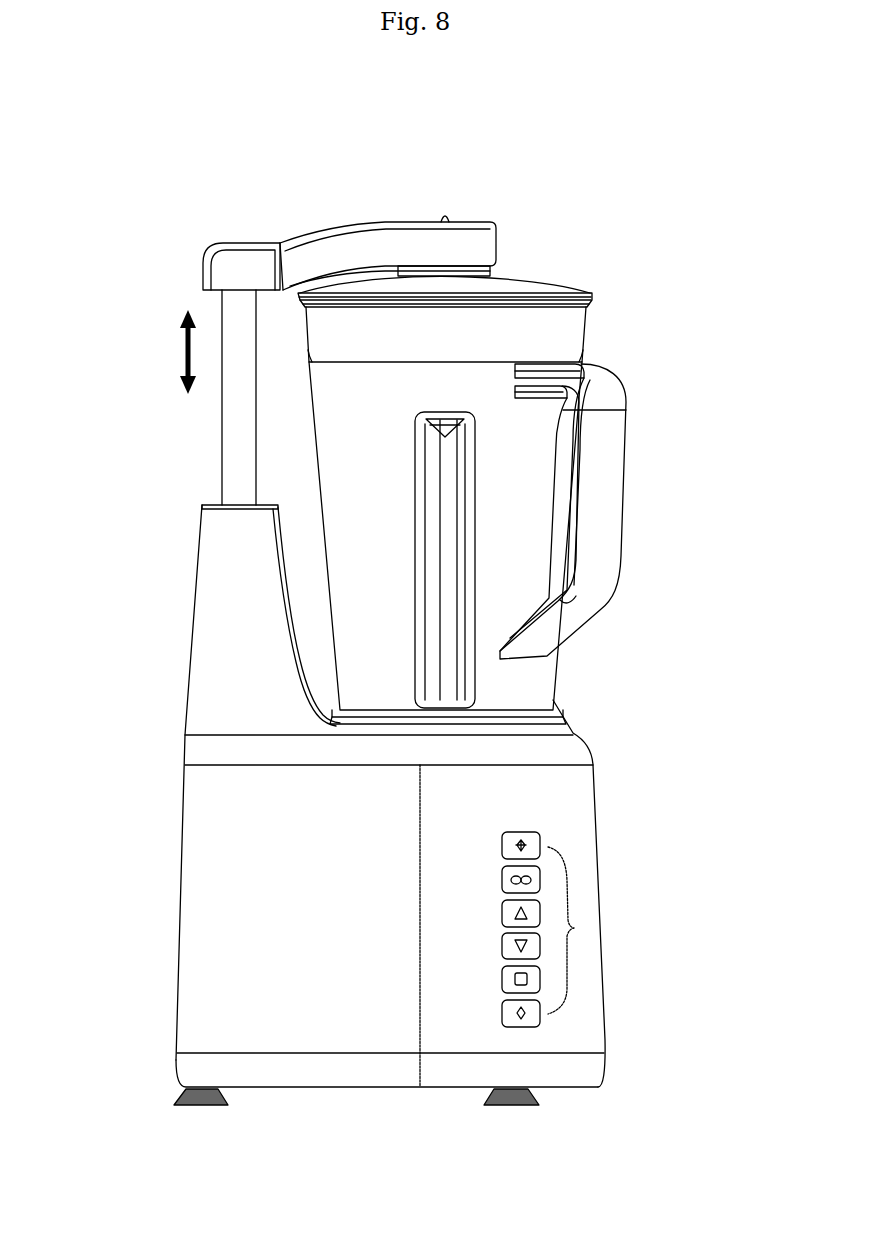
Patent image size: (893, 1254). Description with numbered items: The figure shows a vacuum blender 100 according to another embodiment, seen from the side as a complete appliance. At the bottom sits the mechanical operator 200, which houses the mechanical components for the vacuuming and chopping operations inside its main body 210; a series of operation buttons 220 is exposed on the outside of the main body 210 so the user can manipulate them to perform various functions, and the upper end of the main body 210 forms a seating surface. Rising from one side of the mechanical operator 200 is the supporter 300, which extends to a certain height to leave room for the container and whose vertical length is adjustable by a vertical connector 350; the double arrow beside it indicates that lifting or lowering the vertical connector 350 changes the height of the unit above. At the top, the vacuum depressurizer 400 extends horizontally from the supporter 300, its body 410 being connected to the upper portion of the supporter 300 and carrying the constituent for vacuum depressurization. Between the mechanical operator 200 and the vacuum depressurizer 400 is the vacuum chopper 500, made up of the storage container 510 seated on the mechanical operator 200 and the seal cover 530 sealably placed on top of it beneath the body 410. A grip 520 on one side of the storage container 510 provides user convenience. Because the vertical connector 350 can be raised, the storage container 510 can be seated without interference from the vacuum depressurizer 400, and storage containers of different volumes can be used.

The vacuum blender 100 is at (642, 164).
The mechanical operator 200 is at (606, 839).
The main body 210 is at (200, 906).
The operation buttons 220 is at (590, 926).
The supporter 300 is at (201, 463).
The vertical connector 350 is at (222, 407).
The vacuum depressurizer 400 is at (410, 198).
The body 410 is at (342, 226).
The vacuum chopper 500 is at (631, 486).
The storage container 510 is at (365, 606).
The grip 520 is at (616, 548).
The seal cover 530 is at (527, 279).